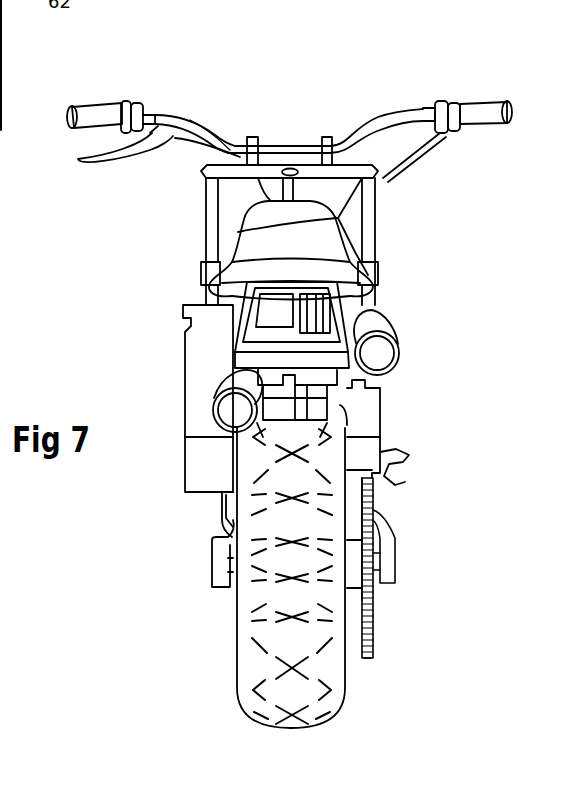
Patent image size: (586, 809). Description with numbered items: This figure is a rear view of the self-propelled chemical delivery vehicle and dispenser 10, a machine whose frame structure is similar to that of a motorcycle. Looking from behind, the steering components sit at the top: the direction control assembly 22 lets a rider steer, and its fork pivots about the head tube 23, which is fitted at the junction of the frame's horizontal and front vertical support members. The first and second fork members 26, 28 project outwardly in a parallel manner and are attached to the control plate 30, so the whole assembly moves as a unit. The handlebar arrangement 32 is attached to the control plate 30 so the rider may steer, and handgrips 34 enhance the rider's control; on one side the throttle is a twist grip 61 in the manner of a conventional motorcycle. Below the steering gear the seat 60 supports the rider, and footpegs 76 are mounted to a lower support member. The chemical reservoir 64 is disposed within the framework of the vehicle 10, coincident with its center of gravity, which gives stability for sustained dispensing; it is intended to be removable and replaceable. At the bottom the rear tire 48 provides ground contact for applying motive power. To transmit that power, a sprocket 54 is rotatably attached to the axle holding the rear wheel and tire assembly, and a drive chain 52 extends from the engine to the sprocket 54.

The self-propelled chemical delivery vehicle and dispenser 10 is at (150, 553).
The direction control assembly 22 is at (292, 116).
The head tube 23 is at (300, 190).
The first fork member 26 is at (208, 208).
The second fork member 28 is at (372, 216).
The control plate 30 is at (203, 165).
The handlebar arrangement 32 is at (205, 136).
The handgrips 34 is at (103, 117).
The rear tire 48 is at (250, 660).
The drive chain 52 is at (367, 660).
The sprocket 54 is at (373, 641).
The seat 60 is at (253, 243).
The twist grip 61 is at (484, 112).
The chemical reservoir 64 is at (200, 357).
The footpegs 76 is at (408, 462).